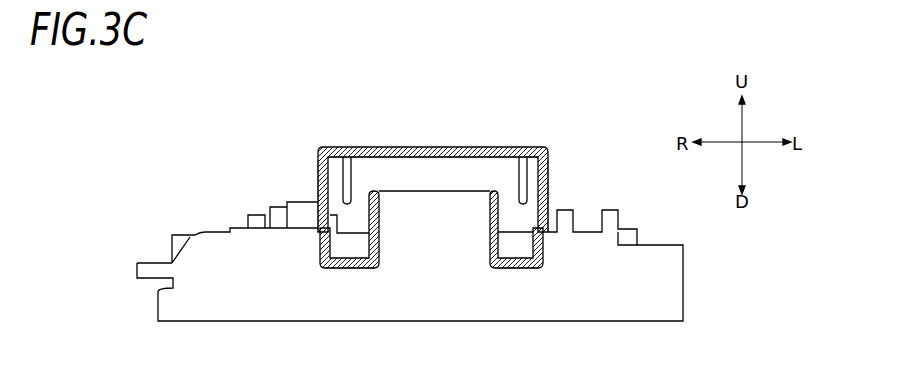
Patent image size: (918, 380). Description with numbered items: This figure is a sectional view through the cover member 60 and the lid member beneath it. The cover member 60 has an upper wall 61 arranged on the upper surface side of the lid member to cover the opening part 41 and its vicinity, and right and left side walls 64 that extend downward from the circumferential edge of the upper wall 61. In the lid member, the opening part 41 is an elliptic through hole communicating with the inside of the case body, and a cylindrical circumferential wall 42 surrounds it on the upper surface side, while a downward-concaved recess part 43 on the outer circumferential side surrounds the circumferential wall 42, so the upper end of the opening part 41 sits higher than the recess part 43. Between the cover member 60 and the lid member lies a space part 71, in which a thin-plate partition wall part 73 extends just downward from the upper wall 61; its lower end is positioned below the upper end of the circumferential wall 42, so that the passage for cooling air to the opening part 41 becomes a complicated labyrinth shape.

The opening part 41 is at (434, 212).
The circumferential wall 42 is at (500, 213).
The recess part 43 is at (346, 268).
The cover member 60 is at (490, 147).
The upper wall 61 is at (392, 147).
The side wall 64 is at (317, 168).
The space part 71 is at (362, 184).
The partition wall part 73 is at (340, 147).